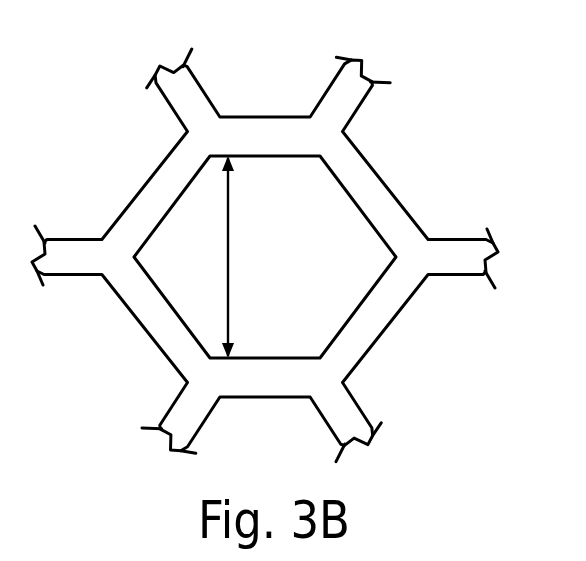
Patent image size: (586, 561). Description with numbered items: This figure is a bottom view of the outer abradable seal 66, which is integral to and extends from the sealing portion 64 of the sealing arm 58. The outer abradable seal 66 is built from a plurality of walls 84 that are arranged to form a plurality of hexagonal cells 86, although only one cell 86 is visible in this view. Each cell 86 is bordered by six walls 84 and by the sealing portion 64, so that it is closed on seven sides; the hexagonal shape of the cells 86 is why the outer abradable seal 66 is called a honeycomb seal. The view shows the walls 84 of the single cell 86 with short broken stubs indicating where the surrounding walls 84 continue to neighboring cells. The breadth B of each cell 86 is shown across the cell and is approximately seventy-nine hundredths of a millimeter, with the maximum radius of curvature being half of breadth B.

The sealing arm 58 is at (442, 89).
The outer abradable seal 66 is at (394, 192).
The wall 84 is at (150, 176).
The hexagonal cell 86 is at (174, 308).
The sealing portion 64 is at (228, 269).
The breadth B is at (228, 295).